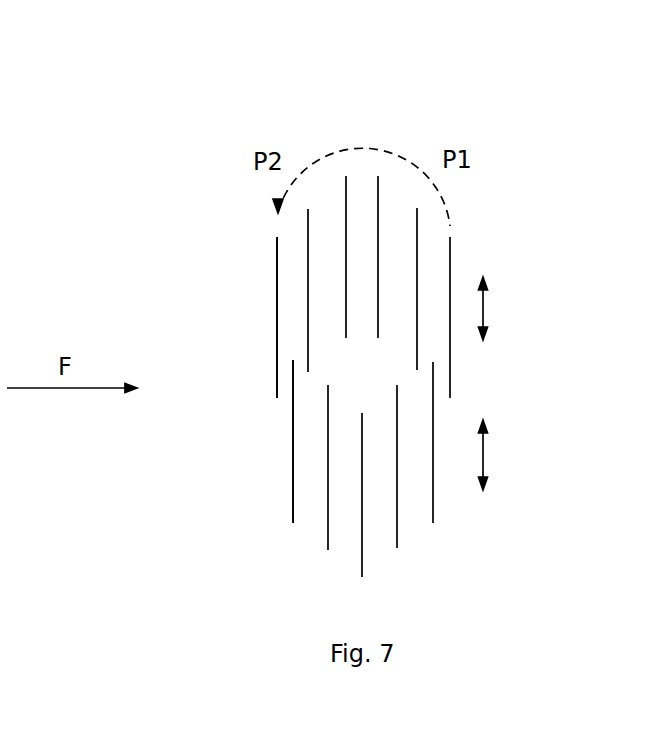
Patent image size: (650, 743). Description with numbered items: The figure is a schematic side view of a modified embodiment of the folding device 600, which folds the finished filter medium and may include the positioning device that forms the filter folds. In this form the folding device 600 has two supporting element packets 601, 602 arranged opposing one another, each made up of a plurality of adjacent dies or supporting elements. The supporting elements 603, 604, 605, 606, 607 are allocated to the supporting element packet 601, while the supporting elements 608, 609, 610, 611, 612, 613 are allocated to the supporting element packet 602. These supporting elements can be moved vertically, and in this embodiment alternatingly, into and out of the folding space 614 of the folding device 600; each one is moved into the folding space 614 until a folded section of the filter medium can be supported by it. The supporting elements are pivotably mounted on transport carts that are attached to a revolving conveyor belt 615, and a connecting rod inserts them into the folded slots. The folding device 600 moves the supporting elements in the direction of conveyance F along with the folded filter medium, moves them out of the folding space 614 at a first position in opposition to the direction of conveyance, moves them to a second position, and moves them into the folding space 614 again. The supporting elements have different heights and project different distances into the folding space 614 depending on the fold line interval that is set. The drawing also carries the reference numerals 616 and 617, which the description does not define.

The folding device 600 is at (148, 520).
The supporting element packet 601 is at (287, 457).
The supporting element packet 602 is at (272, 250).
The supporting element 603 is at (433, 512).
The supporting element 604 is at (397, 542).
The supporting element 605 is at (363, 568).
The supporting element 606 is at (328, 543).
The supporting element 607 is at (293, 513).
The supporting element 608 is at (450, 262).
The supporting element 609 is at (417, 229).
The supporting element 610 is at (380, 185).
The supporting element 611 is at (342, 188).
The supporting element 612 is at (308, 342).
The supporting element 613 is at (277, 287).
The folding space 614 is at (365, 367).
The revolving conveyor belt 615 is at (483, 463).
The movement direction 616 is at (483, 308).
The pivot region 617 is at (330, 147).